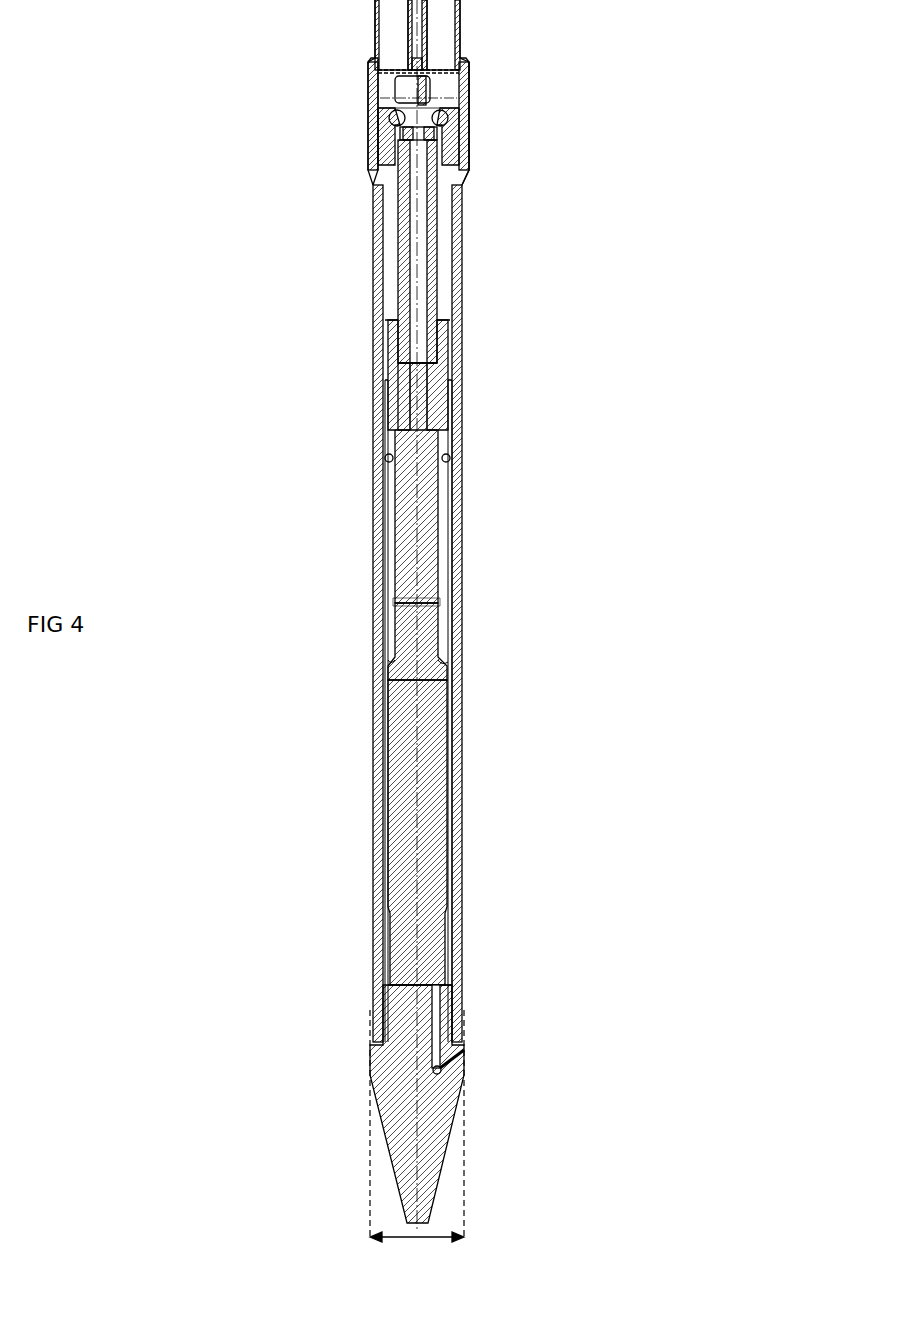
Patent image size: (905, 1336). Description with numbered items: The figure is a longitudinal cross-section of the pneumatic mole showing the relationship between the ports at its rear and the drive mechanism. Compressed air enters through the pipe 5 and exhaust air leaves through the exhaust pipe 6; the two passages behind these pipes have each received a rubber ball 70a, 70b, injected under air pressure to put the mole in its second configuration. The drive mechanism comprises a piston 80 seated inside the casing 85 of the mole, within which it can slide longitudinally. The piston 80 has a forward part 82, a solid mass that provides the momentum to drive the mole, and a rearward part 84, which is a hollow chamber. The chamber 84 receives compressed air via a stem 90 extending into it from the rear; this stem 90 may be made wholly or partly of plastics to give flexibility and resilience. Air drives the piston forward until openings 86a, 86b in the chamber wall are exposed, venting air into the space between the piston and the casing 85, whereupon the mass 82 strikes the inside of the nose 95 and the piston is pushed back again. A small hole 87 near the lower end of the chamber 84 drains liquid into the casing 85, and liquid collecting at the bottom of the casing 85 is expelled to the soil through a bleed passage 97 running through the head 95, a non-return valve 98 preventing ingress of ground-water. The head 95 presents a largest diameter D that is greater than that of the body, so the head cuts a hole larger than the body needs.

The pipe 5 is at (394, 28).
The exhaust pipe 6 is at (440, 30).
The rubber ball 70a is at (395, 118).
The rubber ball 70b is at (442, 120).
The stem 90 is at (430, 240).
The opening 86a is at (387, 460).
The opening 86b is at (448, 462).
The rearward part 84 is at (425, 512).
The hole 87 is at (390, 601).
The piston 80 is at (443, 627).
The casing 85 is at (378, 750).
The forward part 82 is at (432, 767).
The bleed passage 97 is at (437, 997).
The non-return valve 98 is at (440, 1072).
The nose 95 is at (430, 1097).
The largest diameter D is at (400, 1235).